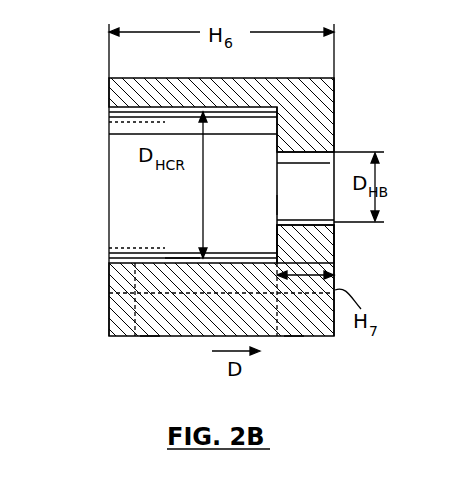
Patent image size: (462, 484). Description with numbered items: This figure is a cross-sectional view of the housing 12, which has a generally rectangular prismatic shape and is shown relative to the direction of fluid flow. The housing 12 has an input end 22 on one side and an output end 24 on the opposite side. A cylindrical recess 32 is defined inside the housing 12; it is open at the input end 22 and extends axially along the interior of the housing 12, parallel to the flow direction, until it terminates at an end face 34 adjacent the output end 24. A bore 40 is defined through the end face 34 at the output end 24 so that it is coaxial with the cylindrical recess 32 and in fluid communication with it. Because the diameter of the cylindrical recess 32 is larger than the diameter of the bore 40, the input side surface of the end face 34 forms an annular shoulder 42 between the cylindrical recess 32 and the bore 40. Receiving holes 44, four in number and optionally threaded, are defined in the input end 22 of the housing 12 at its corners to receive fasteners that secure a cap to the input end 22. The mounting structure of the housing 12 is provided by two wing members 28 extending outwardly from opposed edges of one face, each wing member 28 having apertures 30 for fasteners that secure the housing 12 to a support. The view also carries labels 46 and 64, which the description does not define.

The housing 12 is at (184, 284).
The input end 22 is at (98, 211).
The output end 24 is at (338, 207).
The wing members 28 is at (108, 322).
The apertures 30 is at (150, 337).
The cylindrical recess 32 is at (262, 118).
The end face 34 is at (320, 255).
The bore 40 is at (318, 165).
The annular shoulder 42 is at (276, 236).
The receiving holes 44 is at (104, 113).
The lower chamber region 46 is at (178, 258).
The inner wall surface 64 is at (276, 205).